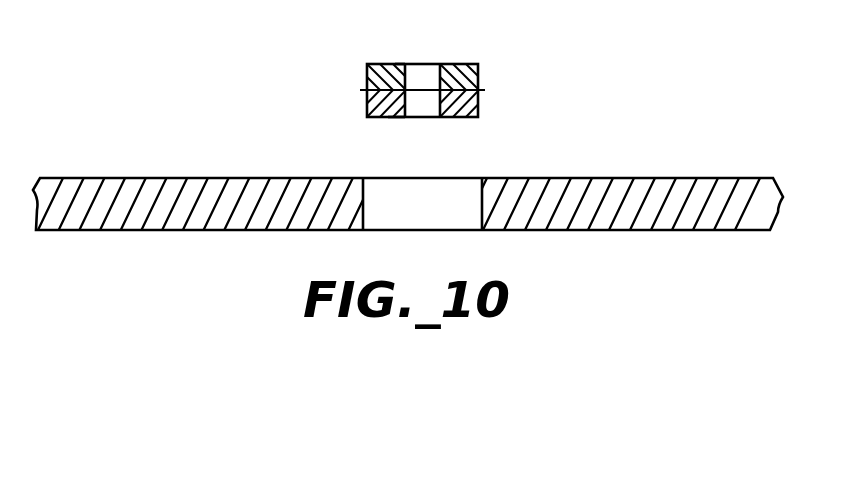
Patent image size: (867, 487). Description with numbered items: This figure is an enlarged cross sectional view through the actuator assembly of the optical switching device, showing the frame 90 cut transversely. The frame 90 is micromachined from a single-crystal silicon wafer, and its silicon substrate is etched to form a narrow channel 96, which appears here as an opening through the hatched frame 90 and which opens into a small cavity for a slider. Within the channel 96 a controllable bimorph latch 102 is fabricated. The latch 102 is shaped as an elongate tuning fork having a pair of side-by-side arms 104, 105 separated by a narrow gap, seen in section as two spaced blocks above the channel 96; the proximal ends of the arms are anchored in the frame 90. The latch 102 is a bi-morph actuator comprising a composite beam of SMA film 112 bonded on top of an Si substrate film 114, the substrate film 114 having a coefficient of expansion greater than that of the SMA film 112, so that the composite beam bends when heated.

The frame 90 is at (408, 180).
The channel 96 is at (478, 192).
The bimorph latch 102 is at (423, 81).
The arm 104 is at (485, 90).
The arm 105 is at (360, 90).
The SMA film 112 is at (398, 63).
The Si substrate film 114 is at (392, 118).